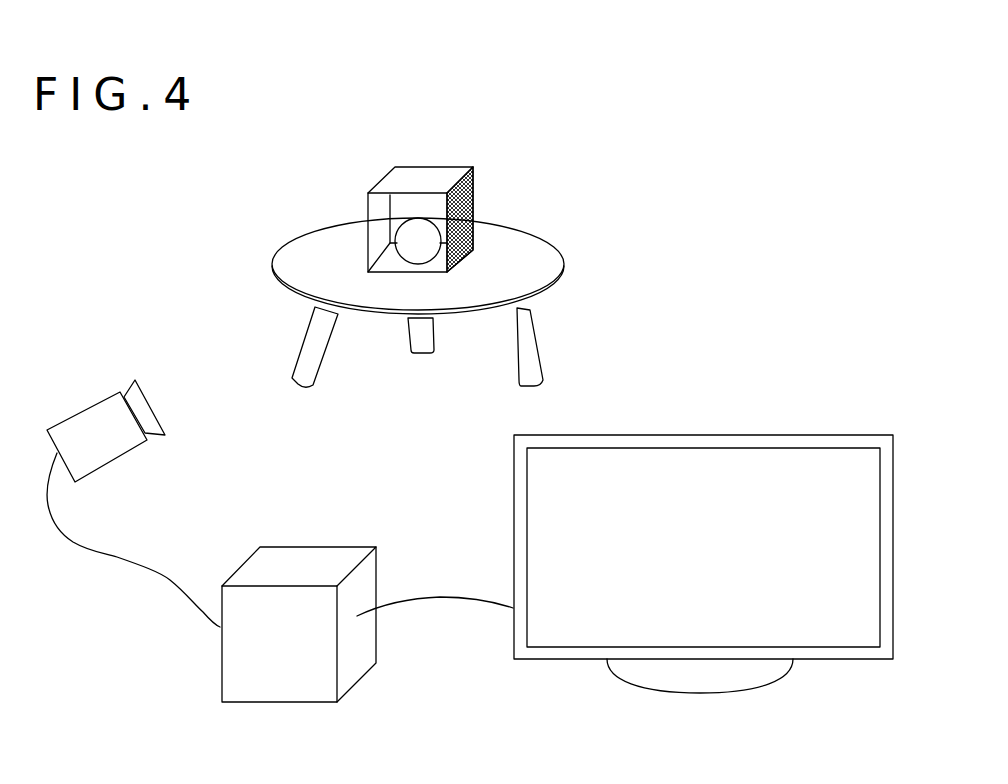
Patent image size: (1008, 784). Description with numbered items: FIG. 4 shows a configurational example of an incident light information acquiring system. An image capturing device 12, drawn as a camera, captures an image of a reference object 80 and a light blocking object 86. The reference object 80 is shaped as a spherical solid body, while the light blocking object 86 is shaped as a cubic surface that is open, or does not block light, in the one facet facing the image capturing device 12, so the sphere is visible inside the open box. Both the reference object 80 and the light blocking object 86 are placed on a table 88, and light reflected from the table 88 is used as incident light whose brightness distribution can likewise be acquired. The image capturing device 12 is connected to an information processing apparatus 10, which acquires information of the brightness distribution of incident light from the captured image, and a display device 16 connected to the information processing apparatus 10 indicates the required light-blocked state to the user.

The information processing apparatus 10 is at (313, 546).
The image capturing device 12 is at (73, 418).
The display device 16 is at (815, 434).
The reference object 80 is at (427, 258).
The light blocking object 86 is at (440, 167).
The table 88 is at (543, 232).